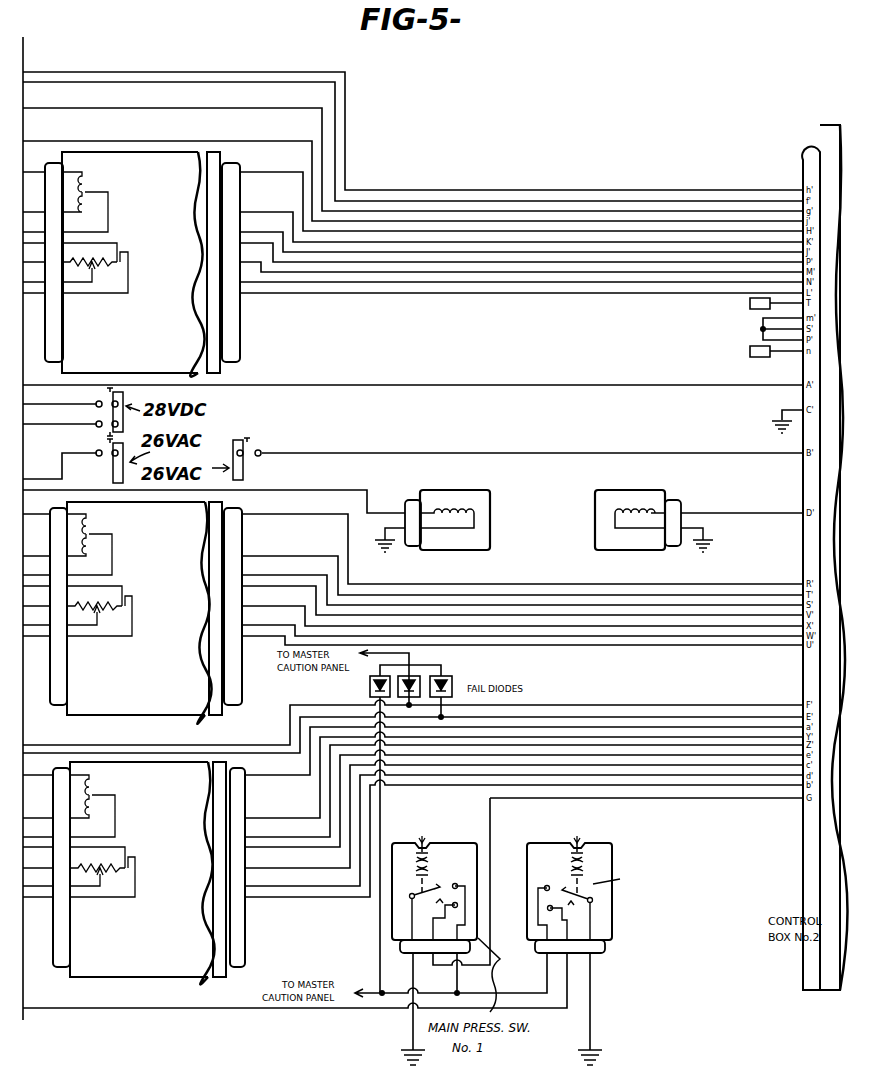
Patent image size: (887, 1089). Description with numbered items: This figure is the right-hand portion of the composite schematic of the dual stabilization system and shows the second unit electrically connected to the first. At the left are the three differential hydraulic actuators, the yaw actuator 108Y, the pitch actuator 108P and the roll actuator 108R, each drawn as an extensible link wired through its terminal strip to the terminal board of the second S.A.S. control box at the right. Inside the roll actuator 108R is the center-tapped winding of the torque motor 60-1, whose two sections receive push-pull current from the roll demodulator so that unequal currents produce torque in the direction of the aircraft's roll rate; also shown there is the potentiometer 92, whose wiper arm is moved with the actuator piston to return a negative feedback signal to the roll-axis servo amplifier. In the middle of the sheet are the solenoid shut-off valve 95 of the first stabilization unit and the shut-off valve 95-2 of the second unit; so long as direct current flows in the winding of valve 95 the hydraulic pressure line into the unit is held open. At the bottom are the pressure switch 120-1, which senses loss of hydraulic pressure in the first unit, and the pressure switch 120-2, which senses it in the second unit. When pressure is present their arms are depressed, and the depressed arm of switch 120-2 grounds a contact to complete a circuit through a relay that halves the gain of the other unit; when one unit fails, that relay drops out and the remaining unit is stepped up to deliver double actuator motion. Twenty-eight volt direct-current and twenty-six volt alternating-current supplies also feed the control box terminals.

The yaw-axis differential hydraulic actuator 108Y is at (131, 264).
The pitch-axis differential hydraulic actuator 108P is at (132, 613).
The roll-axis differential hydraulic actuator 108R is at (134, 873).
The torque motor 60-1 is at (97, 808).
The potentiometer 92 is at (105, 882).
The solenoid shut-off valve 95 is at (456, 490).
The shut-off valve 95-2 is at (630, 482).
The pressure switch 120-1 is at (461, 843).
The pressure switch 120-2 is at (597, 860).